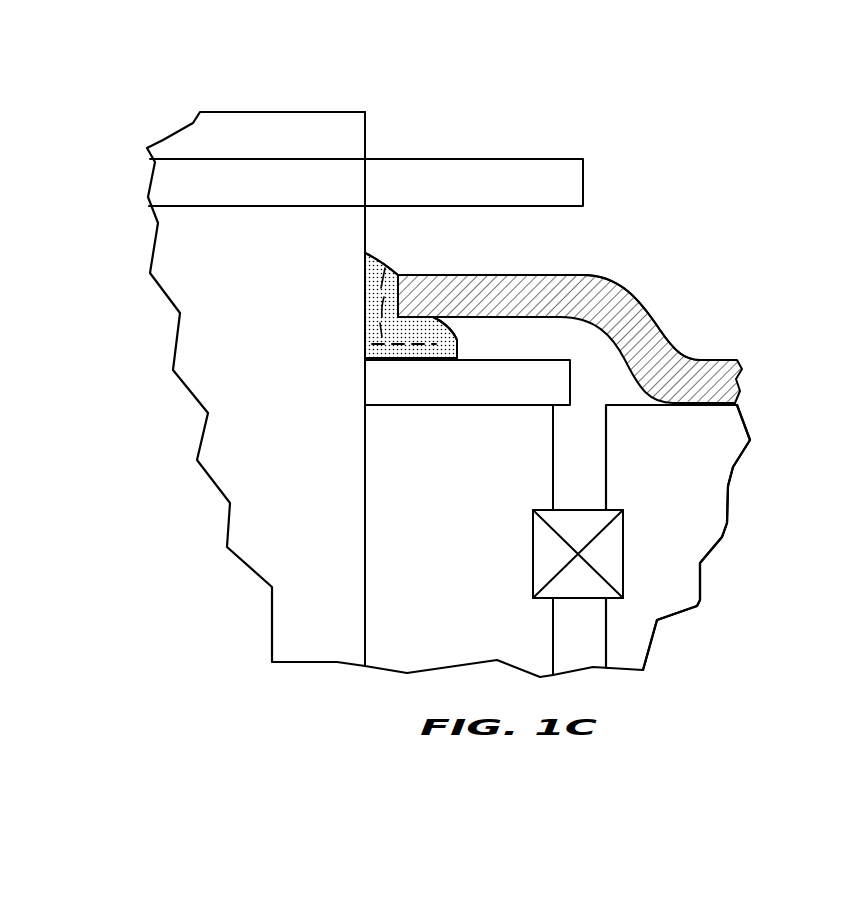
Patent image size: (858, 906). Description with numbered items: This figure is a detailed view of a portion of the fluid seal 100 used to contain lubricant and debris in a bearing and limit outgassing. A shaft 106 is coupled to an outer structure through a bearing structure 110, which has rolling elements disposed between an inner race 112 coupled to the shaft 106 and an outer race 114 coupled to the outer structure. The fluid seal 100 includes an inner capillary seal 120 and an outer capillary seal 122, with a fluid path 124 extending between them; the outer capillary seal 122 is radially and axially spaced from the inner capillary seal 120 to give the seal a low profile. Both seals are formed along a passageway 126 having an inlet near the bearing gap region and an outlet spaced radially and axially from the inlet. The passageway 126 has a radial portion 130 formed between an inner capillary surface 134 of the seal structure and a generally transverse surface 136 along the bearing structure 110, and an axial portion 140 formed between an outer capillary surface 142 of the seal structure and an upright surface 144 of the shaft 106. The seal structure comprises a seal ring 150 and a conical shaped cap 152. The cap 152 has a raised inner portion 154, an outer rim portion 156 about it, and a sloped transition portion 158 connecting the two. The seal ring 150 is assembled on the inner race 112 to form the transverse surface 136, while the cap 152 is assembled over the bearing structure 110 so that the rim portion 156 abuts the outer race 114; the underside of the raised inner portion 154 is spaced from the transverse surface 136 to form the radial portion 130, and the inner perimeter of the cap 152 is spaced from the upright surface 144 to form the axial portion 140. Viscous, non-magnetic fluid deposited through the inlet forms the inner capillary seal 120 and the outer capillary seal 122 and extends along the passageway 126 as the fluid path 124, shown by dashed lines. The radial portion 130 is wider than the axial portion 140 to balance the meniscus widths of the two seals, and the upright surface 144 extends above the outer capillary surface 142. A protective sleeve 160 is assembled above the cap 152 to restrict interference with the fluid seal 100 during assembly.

The fluid seal 100 is at (460, 235).
The shaft 106 is at (303, 482).
The bearing structure 110 is at (705, 485).
The inner race 112 is at (463, 513).
The outer race 114 is at (674, 491).
The inner capillary seal 120 is at (463, 341).
The outer capillary seal 122 is at (375, 253).
The fluid path 124 is at (382, 318).
The passageway 126 is at (365, 345).
The radial portion 130 is at (462, 365).
The inner capillary surface 134 is at (440, 320).
The transverse surface 136 is at (455, 329).
The axial portion 140 is at (360, 315).
The outer capillary surface 142 is at (385, 270).
The upright surface 144 is at (366, 229).
The seal ring 150 is at (554, 397).
The conical shaped cap 152 is at (625, 317).
The raised inner portion 154 is at (591, 294).
The outer rim portion 156 is at (716, 370).
The sloped transition portion 158 is at (659, 316).
The protective sleeve 160 is at (273, 179).